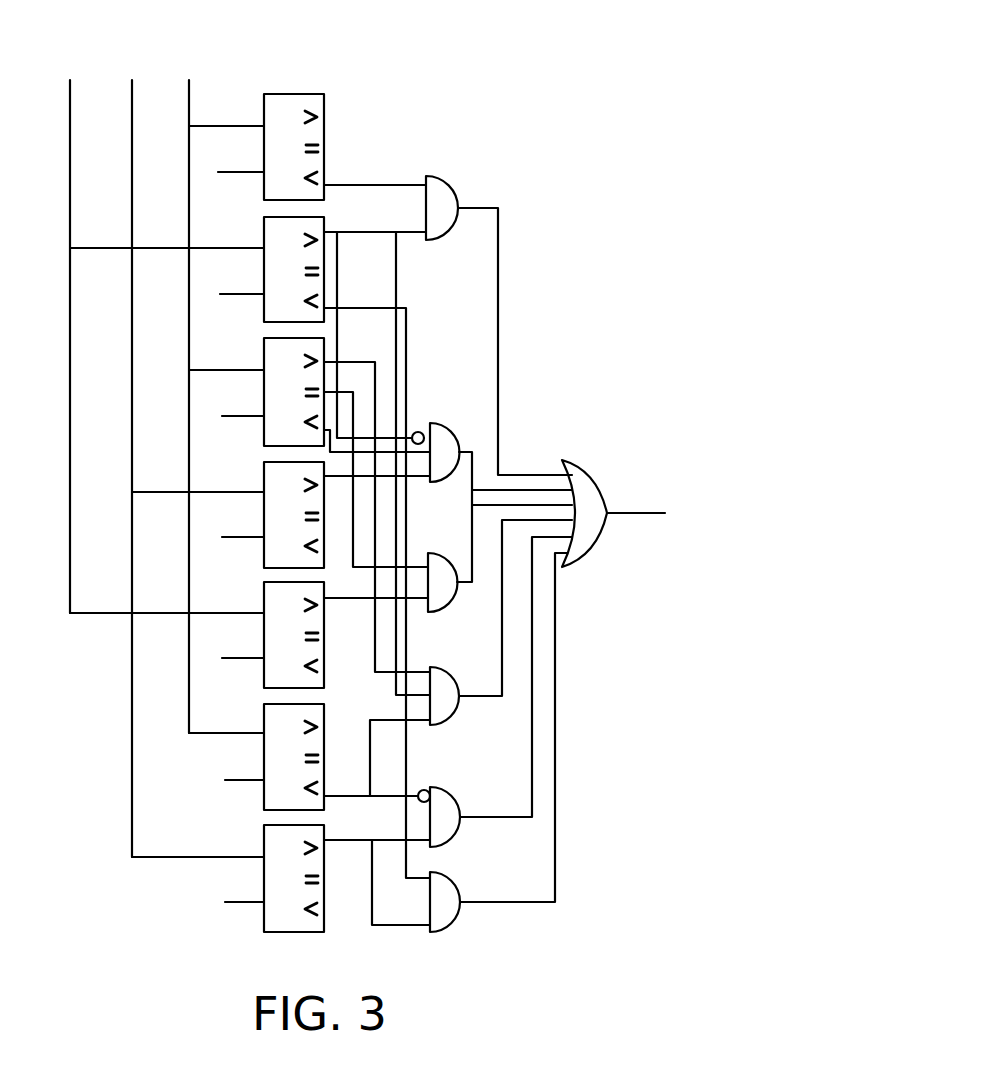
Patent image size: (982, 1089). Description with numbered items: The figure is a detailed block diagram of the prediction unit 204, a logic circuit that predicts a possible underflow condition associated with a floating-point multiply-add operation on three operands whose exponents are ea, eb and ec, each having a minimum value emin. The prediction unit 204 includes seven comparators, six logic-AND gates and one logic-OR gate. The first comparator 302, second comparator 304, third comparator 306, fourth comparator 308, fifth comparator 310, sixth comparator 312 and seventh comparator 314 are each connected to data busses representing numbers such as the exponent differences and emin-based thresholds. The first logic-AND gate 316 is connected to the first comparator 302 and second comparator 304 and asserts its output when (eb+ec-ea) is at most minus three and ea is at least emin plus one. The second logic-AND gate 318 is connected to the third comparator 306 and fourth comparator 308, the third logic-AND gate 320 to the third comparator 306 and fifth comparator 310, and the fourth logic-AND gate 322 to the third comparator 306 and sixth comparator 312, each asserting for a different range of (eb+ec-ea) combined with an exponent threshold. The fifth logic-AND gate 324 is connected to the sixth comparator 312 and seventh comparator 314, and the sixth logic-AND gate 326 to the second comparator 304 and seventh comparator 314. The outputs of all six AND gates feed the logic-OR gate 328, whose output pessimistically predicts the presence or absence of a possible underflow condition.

The prediction unit 204 is at (449, 58).
The first comparator 302 is at (263, 192).
The second comparator 304 is at (263, 314).
The third comparator 306 is at (263, 432).
The fourth comparator 308 is at (263, 556).
The fifth comparator 310 is at (264, 680).
The sixth comparator 312 is at (264, 800).
The seventh comparator 314 is at (264, 924).
The first logic-AND gate 316 is at (447, 187).
The second logic-AND gate 318 is at (434, 424).
The third logic-AND gate 320 is at (456, 548).
The fourth logic-AND gate 322 is at (454, 672).
The fifth logic-AND gate 324 is at (452, 800).
The sixth logic-AND gate 326 is at (455, 890).
The logic-OR gate 328 is at (590, 468).